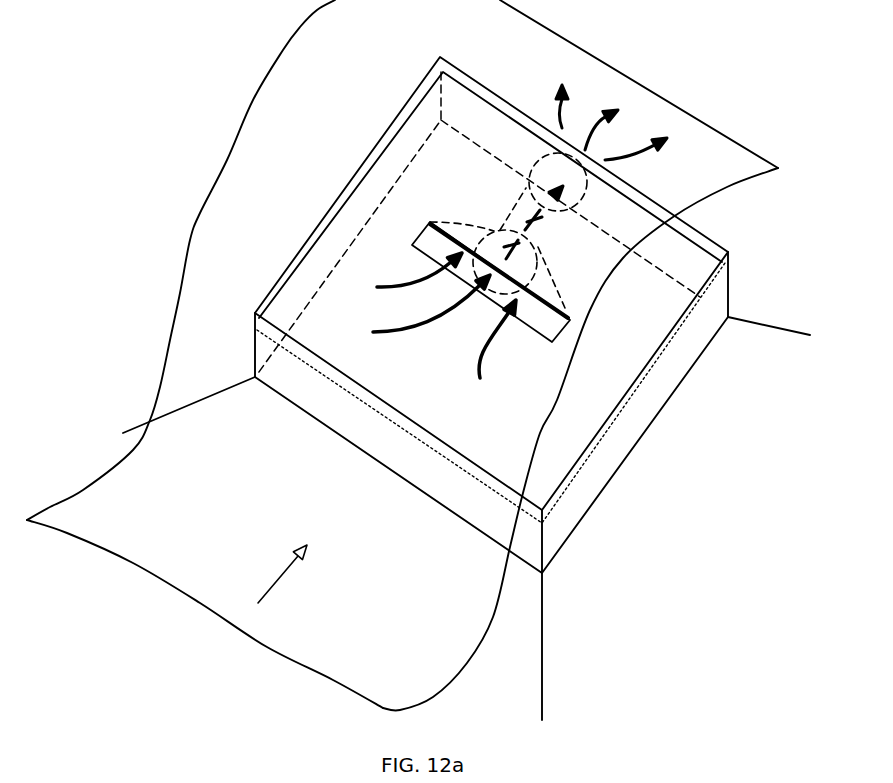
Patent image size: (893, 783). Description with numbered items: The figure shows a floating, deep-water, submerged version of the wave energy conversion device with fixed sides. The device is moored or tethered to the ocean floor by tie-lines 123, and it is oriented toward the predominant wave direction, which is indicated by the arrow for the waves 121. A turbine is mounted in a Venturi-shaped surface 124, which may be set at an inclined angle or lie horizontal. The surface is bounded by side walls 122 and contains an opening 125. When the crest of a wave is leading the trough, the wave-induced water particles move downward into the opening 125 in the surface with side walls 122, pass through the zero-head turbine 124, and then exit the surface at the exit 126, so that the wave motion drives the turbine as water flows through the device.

The waves 121 is at (540, 60).
The side walls 122 is at (703, 315).
The tie-lines 123 is at (543, 630).
The Venturi-shaped surface with zero-head turbine 124 is at (525, 185).
The opening 125 is at (563, 310).
The exit 126 is at (618, 115).